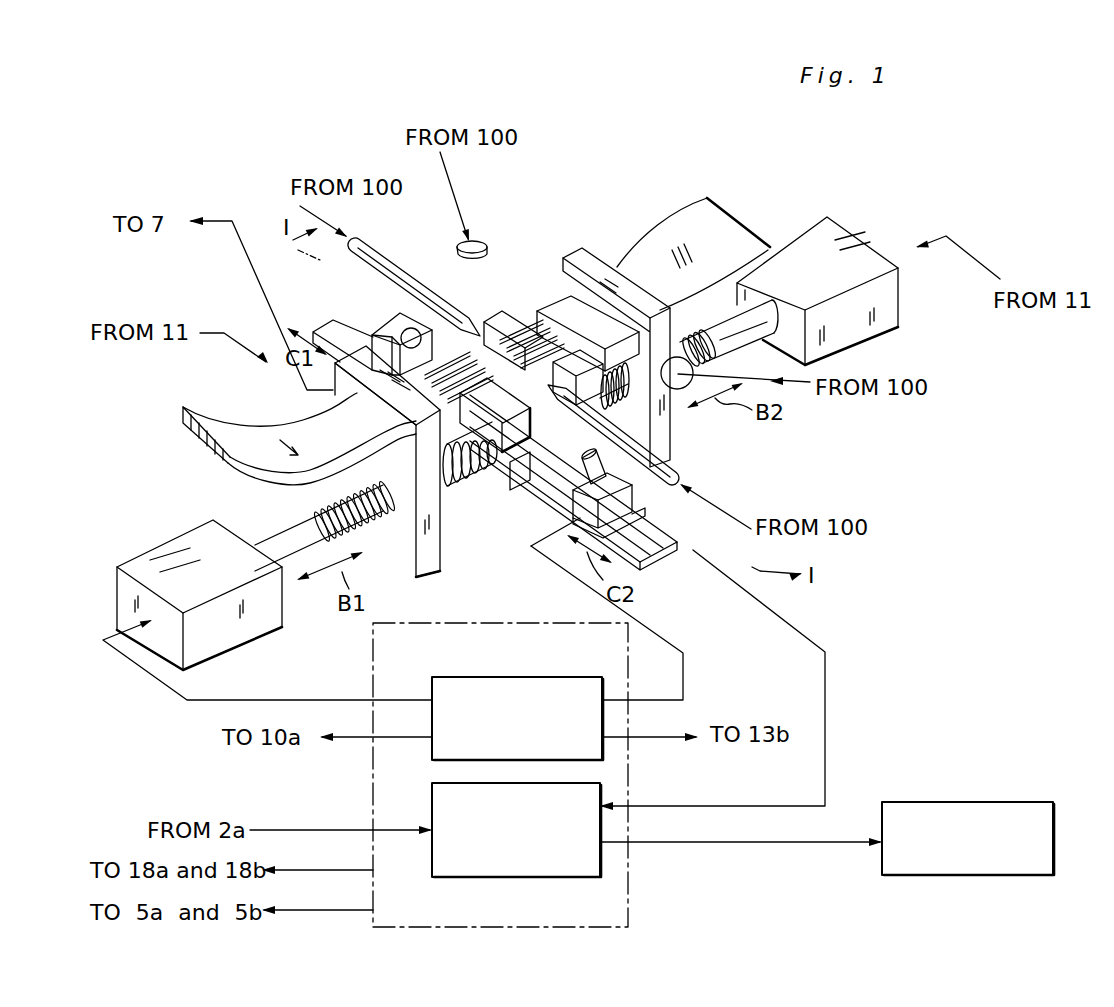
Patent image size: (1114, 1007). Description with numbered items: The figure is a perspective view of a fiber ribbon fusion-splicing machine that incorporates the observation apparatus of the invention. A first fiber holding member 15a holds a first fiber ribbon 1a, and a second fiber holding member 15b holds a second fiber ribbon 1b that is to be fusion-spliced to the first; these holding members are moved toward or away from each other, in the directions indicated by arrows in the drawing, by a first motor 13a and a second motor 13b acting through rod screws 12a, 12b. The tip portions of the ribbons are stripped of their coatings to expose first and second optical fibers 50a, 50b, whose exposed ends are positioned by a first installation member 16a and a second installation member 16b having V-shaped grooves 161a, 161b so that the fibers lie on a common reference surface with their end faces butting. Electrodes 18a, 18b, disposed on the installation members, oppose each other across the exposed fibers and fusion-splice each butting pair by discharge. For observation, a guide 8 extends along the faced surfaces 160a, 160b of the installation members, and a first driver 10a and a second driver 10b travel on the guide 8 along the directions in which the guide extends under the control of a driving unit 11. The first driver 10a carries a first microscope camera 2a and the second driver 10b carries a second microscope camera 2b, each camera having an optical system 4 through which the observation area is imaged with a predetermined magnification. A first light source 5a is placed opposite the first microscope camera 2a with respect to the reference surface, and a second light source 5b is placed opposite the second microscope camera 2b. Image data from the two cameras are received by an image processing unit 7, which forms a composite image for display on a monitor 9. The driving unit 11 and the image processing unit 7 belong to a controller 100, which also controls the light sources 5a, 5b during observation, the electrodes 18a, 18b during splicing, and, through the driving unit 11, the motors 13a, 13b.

The first fiber ribbon 1a is at (192, 436).
The second fiber ribbon 1b is at (690, 236).
The first microscope camera 2a is at (383, 327).
The second microscope camera 2b is at (632, 493).
The optical system 4 is at (410, 335).
The first light source 5a is at (684, 357).
The second light source 5b is at (490, 248).
The image processing unit 7 is at (432, 805).
The guide 8 is at (666, 557).
The monitor 9 is at (994, 803).
The first driver 10a is at (383, 368).
The second driver 10b is at (655, 522).
The driving unit 11 is at (547, 677).
The rod screw 12a is at (302, 534).
The rod screw 12b is at (767, 320).
The first motor 13a is at (182, 560).
The second motor 13b is at (879, 320).
The first fiber holding member 15a is at (440, 553).
The second fiber holding member 15b is at (605, 272).
The first installation member 16a is at (507, 460).
The second installation member 16b is at (516, 328).
The electrode 18a is at (397, 270).
The electrode 18b is at (688, 470).
The first optical fibers 50a is at (457, 490).
The second optical fibers 50b is at (559, 345).
The controller 100 is at (628, 858).
The faced surface 160a is at (452, 341).
The faced surface 160b is at (443, 335).
The V-shaped grooves 161a is at (515, 483).
The V-shaped grooves 161b is at (620, 397).